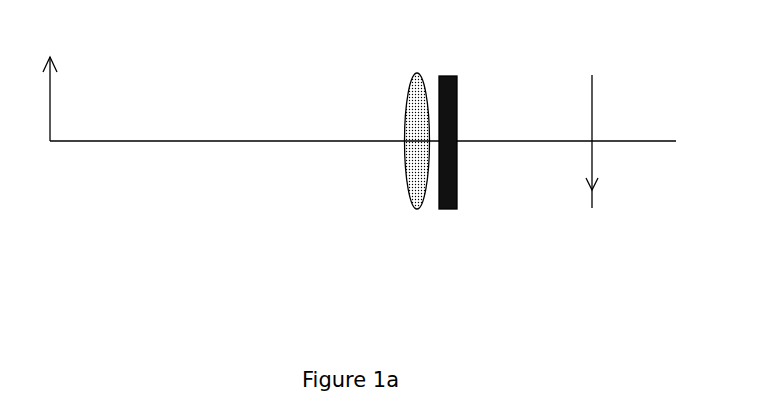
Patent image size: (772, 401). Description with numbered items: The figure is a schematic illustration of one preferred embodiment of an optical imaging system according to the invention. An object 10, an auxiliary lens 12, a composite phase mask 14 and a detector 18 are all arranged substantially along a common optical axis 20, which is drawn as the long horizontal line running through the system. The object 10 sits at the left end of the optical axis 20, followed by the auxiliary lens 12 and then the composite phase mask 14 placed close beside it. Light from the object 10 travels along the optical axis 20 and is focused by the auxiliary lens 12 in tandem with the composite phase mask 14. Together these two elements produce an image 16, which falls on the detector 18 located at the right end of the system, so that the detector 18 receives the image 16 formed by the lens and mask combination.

The object 10 is at (52, 110).
The auxiliary lens 12 is at (405, 175).
The composite phase mask 14 is at (458, 210).
The image 16 is at (590, 212).
The detector 18 is at (595, 163).
The optical axis 20 is at (216, 138).